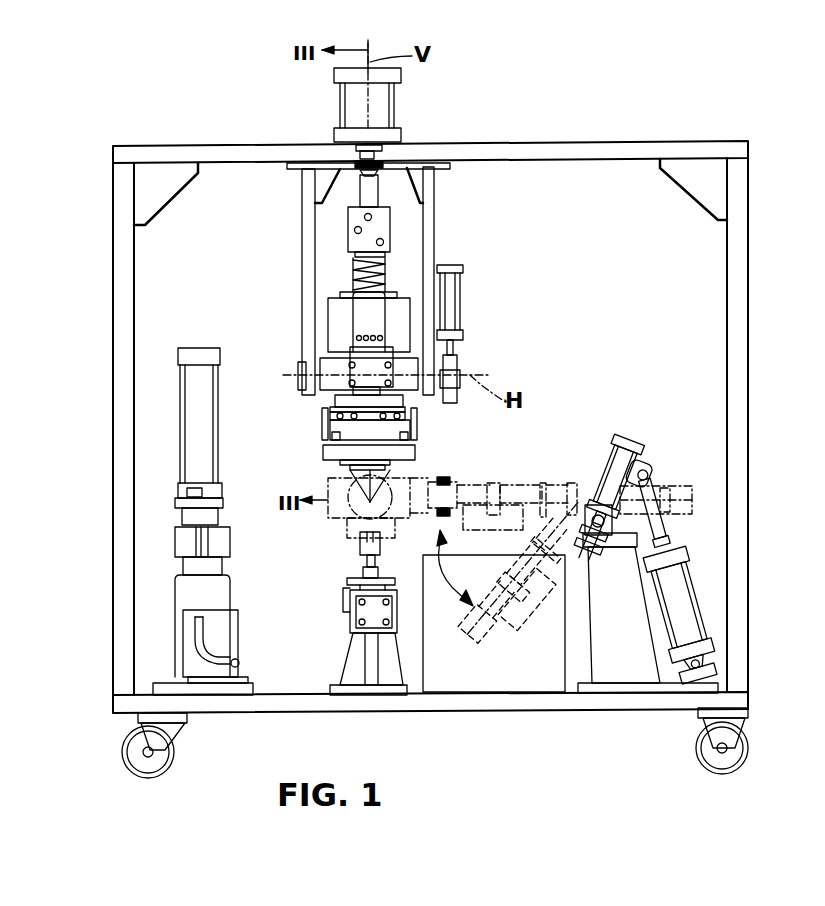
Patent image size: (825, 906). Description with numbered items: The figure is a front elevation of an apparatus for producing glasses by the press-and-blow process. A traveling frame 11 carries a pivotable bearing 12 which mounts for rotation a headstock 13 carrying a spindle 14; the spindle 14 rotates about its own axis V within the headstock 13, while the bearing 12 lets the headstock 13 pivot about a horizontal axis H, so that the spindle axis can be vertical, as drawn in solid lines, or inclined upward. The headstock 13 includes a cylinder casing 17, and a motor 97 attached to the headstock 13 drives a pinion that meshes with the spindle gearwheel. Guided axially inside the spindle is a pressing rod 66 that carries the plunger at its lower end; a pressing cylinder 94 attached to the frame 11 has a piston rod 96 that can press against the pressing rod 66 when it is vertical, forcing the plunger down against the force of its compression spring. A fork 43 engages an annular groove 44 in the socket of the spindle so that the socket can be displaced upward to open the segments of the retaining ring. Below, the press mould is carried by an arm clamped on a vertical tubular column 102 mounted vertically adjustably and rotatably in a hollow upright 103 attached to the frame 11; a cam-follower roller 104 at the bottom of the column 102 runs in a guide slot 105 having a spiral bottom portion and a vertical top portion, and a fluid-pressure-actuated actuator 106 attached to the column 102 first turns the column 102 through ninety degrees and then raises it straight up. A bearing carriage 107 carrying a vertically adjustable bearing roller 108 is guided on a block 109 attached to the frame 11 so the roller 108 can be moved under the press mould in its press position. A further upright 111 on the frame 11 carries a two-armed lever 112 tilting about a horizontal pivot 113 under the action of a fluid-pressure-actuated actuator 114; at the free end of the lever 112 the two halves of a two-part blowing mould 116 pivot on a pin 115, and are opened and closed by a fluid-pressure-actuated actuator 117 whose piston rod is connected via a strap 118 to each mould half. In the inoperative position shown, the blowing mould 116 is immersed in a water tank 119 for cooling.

The traveling frame 11 is at (720, 150).
The pressing cylinder 94 is at (380, 105).
The piston rod 96 is at (380, 158).
The pressing rod 66 is at (373, 190).
The spindle 14 is at (340, 281).
The cylinder casing 17 is at (337, 308).
The motor 97 is at (362, 320).
The headstock 13 is at (330, 365).
The pivotable bearing 12 is at (298, 383).
The annular groove 44 is at (350, 438).
The fork 43 is at (415, 436).
The fluid-pressure-actuated actuator 106 is at (200, 452).
The tubular column 102 is at (208, 515).
The hollow upright 103 is at (215, 595).
The guide slot 105 is at (205, 625).
The cam-follower roller 104 is at (238, 660).
The bearing roller 108 is at (360, 543).
The bearing carriage 107 is at (343, 600).
The block 109 is at (352, 670).
The pin 115 is at (450, 470).
The strap 118 is at (463, 503).
The horizontal pivot 113 is at (593, 513).
The fluid-pressure-actuated actuator 117 is at (613, 437).
The two-armed lever 112 is at (640, 443).
The fluid-pressure-actuated actuator 114 is at (680, 608).
The further upright 111 is at (615, 672).
The two-part blowing mould 116 is at (497, 655).
The water tank 119 is at (440, 675).